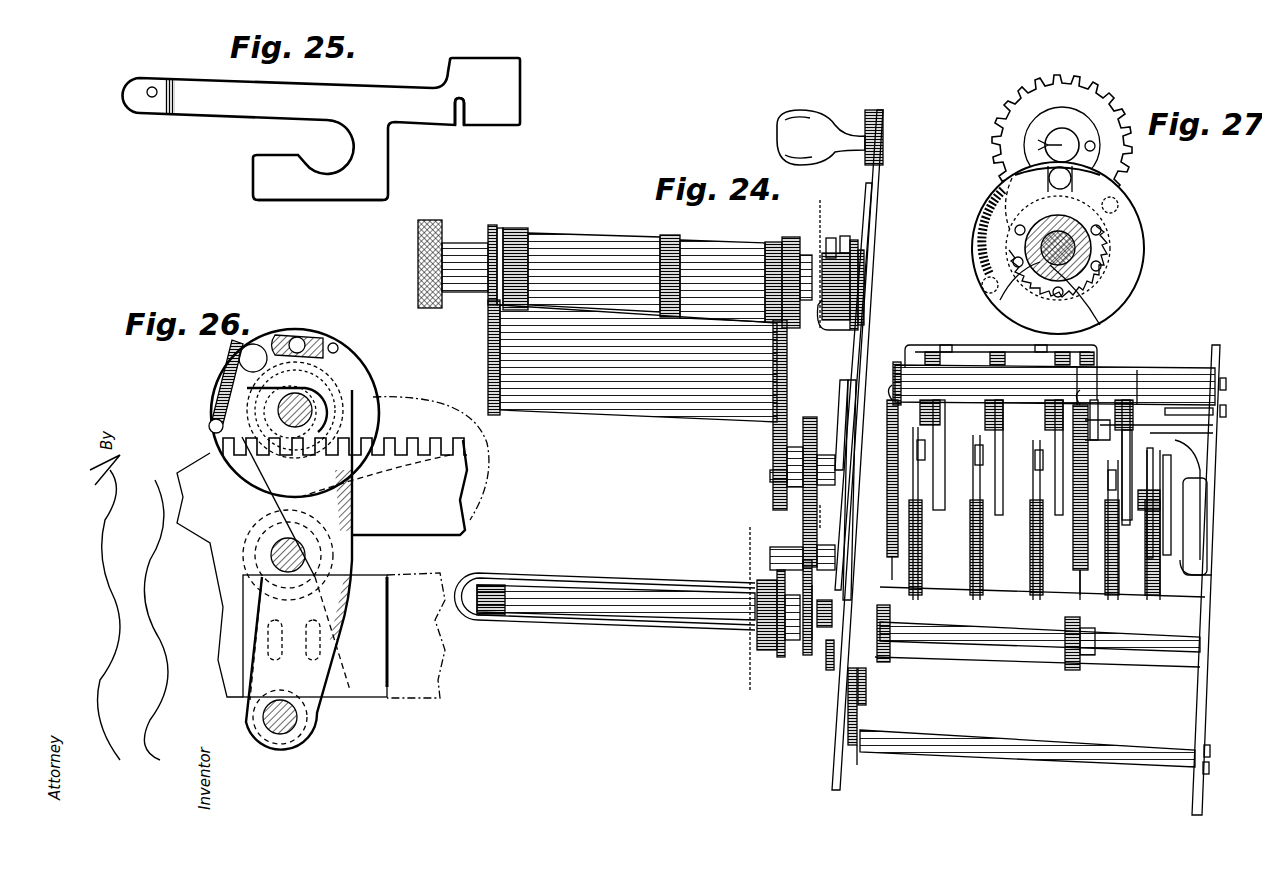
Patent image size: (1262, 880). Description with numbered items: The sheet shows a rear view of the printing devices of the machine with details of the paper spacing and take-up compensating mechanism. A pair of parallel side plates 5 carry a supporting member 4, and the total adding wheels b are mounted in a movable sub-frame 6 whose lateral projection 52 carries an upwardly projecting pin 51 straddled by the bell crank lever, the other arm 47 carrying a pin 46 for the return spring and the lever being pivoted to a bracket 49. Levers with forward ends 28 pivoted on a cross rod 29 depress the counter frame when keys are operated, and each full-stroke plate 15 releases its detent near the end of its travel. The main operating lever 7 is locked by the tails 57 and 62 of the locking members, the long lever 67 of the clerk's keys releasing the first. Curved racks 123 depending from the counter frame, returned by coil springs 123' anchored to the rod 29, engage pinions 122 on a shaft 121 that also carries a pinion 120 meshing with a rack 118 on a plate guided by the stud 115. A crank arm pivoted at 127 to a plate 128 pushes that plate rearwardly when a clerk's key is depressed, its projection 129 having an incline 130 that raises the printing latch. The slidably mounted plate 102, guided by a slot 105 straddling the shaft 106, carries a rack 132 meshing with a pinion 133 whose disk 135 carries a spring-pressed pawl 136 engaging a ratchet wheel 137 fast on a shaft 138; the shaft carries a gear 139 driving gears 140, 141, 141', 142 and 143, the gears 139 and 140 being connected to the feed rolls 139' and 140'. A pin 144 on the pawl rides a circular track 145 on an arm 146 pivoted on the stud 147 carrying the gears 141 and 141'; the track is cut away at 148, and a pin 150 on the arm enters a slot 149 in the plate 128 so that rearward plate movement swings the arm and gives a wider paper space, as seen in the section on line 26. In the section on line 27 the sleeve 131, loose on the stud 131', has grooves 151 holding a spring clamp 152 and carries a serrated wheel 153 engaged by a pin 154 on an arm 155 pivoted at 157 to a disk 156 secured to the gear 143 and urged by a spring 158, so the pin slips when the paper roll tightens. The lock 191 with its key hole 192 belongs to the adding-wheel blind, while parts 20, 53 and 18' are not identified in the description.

In FIG. 25, the pivotal connection 127 is at (153, 97).
In FIG. 25, the plate 128 is at (245, 110).
In FIG. 26, the plate 128 is at (367, 640).
In FIG. 24, the plate 128 is at (772, 472).
In FIG. 25, the projection 129 is at (318, 188).
In FIG. 25, the incline 130 is at (306, 162).
In FIG. 25, the slot 149 is at (459, 115).
In FIG. 26, the slot 149 is at (333, 700).
In FIG. 26, the slot 105 is at (432, 542).
In FIG. 26, the shaft 106 is at (282, 548).
In FIG. 26, the rack 132 is at (447, 487).
In FIG. 26, the pinion 133 is at (358, 392).
In FIG. 24, the pinion 133 is at (864, 268).
In FIG. 26, the disk 135 is at (345, 360).
In FIG. 24, the disk 135 is at (850, 248).
In FIG. 26, the spring-pressed pawl 136 is at (312, 338).
In FIG. 24, the spring-pressed pawl 136 is at (858, 235).
In FIG. 26, the ratchet wheel 137 is at (431, 458).
In FIG. 24, the ratchet wheel 137 is at (852, 303).
In FIG. 26, the shaft 138 is at (317, 417).
In FIG. 26, the pin 144 is at (255, 356).
In FIG. 24, the pin 144 is at (833, 240).
In FIG. 26, the circular track 145 is at (350, 382).
In FIG. 24, the circular track 145 is at (852, 327).
In FIG. 26, the arm 146 is at (340, 508).
In FIG. 24, the arm 146 is at (815, 340).
In FIG. 26, the stud 147 is at (285, 720).
In FIG. 26, the cut-away portion 148 is at (222, 400).
In FIG. 26, the pin 150 is at (407, 673).
In FIG. 27, the pin 150 is at (1046, 179).
In FIG. 24, the main operating lever 7 is at (885, 174).
In FIG. 24, the gear 139 is at (790, 268).
In FIG. 24, the feed roll 139' is at (600, 264).
In FIG. 24, the gear 140 is at (763, 452).
In FIG. 24, the feed roll 140' is at (632, 368).
In FIG. 24, the gear wheel 141 is at (768, 492).
In FIG. 24, the gear wheel 141' is at (774, 485).
In FIG. 24, the gear 142 is at (800, 535).
In FIG. 27, the gear 142 is at (1125, 158).
In FIG. 24, the gear 143 is at (812, 631).
In FIG. 27, the gear 143 is at (1090, 222).
In FIG. 24, the section line 26 is at (820, 200).
In FIG. 24, the section line 27 is at (750, 527).
In FIG. 24, the slidably mounted plate 102 is at (873, 380).
In FIG. 24, the spring clamp 152 is at (587, 580).
In FIG. 27, the spring clamp 152 is at (1103, 322).
In FIG. 24, the sleeve 131 is at (616, 622).
In FIG. 24, the serrated wheel 153 is at (757, 635).
In FIG. 27, the serrated wheel 153 is at (1100, 245).
In FIG. 24, the pin 154 is at (757, 637).
In FIG. 27, the pin 154 is at (1073, 178).
In FIG. 24, the pinion 120 is at (815, 610).
In FIG. 24, the rack 118 is at (840, 685).
In FIG. 24, the disk 156 is at (787, 625).
In FIG. 27, the disk 156 is at (1113, 297).
In FIG. 24, the side plates 5 is at (837, 752).
In FIG. 24, the sub-frame 6 is at (1065, 352).
In FIG. 24, the total adding wheels b is at (994, 341).
In FIG. 24, the supporting member 4 is at (1190, 592).
In FIG. 24, the cross rod 29 is at (1187, 388).
In FIG. 24, the lever end 28 is at (943, 446).
In FIG. 24, the curved racks 123 is at (1013, 510).
In FIG. 24, the coil springs 123' is at (1051, 601).
In FIG. 24, the full-stroke plate 15 is at (925, 530).
In FIG. 24, the type bar 20 is at (925, 570).
In FIG. 24, the pin 51 is at (1110, 408).
In FIG. 24, the lateral projection 52 is at (1108, 428).
In FIG. 24, the pin 46 is at (1205, 412).
In FIG. 24, the rod 53 is at (1195, 426).
In FIG. 24, the bell crank arm 47 is at (1177, 436).
In FIG. 24, the bracket 49 is at (1180, 441).
In FIG. 24, the tail 57 is at (1172, 463).
In FIG. 24, the tail 62 is at (1155, 472).
In FIG. 24, the long lever 67 is at (1133, 447).
In FIG. 24, the block 18' is at (1145, 515).
In FIG. 24, the key hole 192 is at (1208, 543).
In FIG. 24, the lock 191 is at (1195, 565).
In FIG. 24, the shaft 121 is at (993, 633).
In FIG. 24, the pinions 122 is at (893, 615).
In FIG. 27, the stud 115 is at (1040, 146).
In FIG. 27, the stud or shaft 131' is at (1076, 250).
In FIG. 27, the grooves 151 is at (1105, 260).
In FIG. 27, the arm 155 is at (1090, 187).
In FIG. 27, the pivot 157 is at (1118, 206).
In FIG. 27, the spring 158 is at (992, 293).